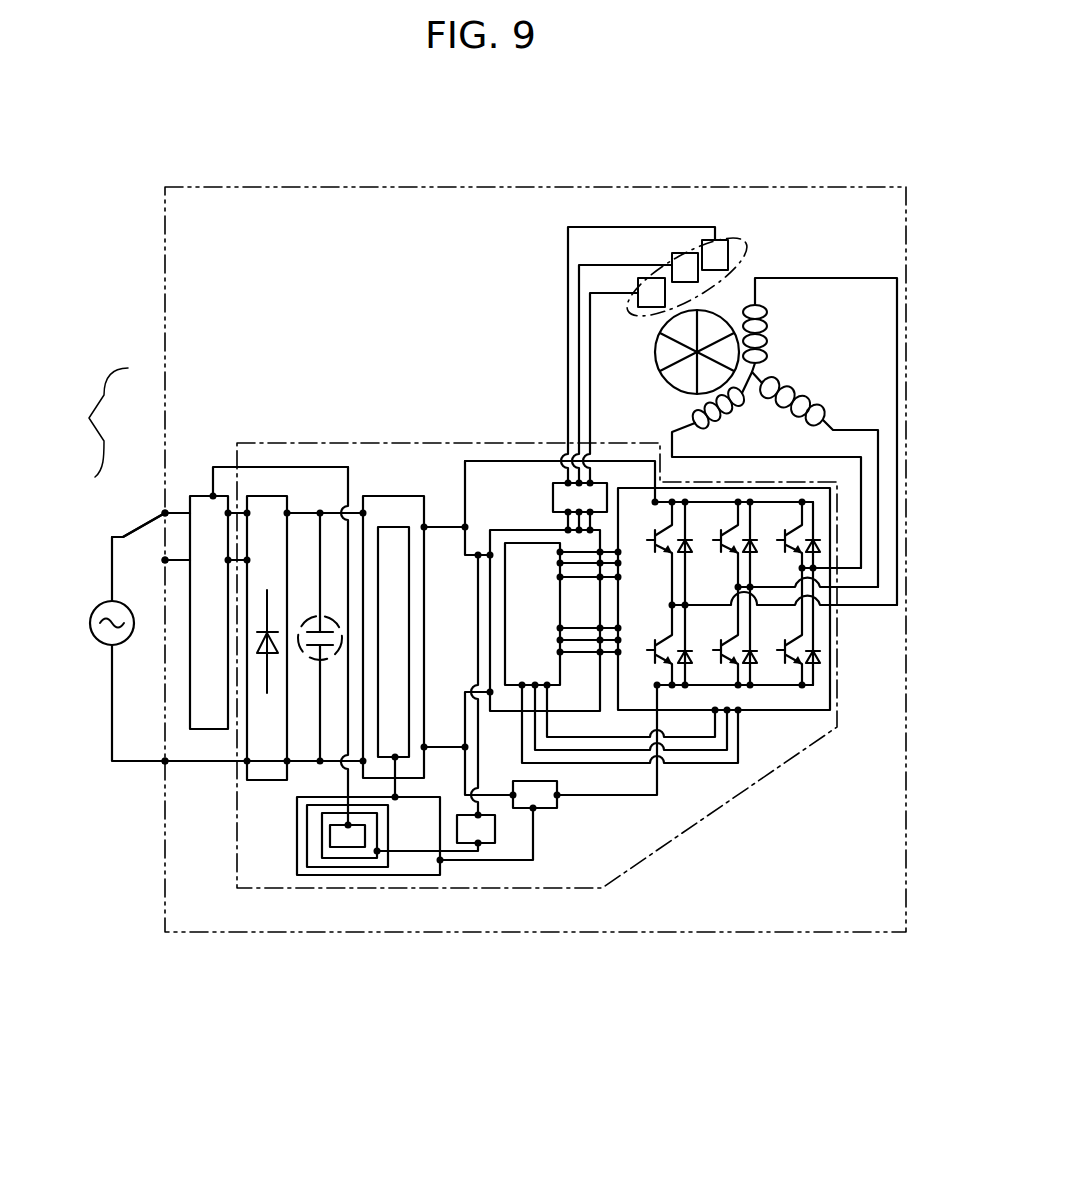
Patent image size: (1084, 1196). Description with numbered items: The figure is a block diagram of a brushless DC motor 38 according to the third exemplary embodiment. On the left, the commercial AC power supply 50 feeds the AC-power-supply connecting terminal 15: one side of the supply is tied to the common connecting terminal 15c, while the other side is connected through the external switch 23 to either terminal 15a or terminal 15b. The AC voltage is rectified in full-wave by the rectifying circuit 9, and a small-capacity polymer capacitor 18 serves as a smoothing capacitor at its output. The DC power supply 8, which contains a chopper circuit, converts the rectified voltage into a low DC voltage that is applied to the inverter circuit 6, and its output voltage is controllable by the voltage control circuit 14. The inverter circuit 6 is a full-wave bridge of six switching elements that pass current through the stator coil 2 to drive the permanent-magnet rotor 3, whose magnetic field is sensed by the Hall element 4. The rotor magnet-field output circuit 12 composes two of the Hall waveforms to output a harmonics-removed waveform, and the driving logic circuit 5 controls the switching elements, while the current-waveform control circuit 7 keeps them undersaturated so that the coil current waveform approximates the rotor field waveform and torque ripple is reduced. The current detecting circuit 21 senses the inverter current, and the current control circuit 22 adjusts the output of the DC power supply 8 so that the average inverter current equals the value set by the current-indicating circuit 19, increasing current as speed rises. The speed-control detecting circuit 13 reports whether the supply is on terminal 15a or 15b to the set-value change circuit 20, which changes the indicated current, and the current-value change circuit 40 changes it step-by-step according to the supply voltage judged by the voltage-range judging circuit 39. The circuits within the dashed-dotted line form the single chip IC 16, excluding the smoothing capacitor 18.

The stator coil 2 is at (737, 407).
The permanent-magnet rotor 3 is at (655, 337).
The Hall element 4 is at (742, 237).
The driving logic circuit 5 is at (588, 700).
The inverter circuit 6 is at (830, 688).
The current-waveform control circuit 7 is at (521, 655).
The DC power supply 8 is at (380, 495).
The rectifying circuit 9 is at (267, 780).
The rotor magnet-field output circuit 12 is at (556, 483).
The speed-control detecting circuit 13 is at (193, 697).
The voltage control circuit 14 is at (400, 527).
The AC-power-supply connecting terminal 15 is at (92, 422).
The terminal 15a is at (165, 513).
The terminal 15b is at (165, 560).
The common connecting terminal 15c is at (163, 765).
The single chip IC 16 is at (260, 441).
The polymer capacitor 18 is at (307, 617).
The current-indicating circuit 19 is at (387, 867).
The set-value change circuit 20 is at (340, 847).
The current detecting circuit 21 is at (543, 798).
The current control circuit 22 is at (427, 877).
The external switch 23 is at (133, 525).
The brushless DC motor 38 is at (532, 187).
The voltage-range judging circuit 39 is at (487, 833).
The current-value change circuit 40 is at (327, 857).
The AC power supply 50 is at (97, 602).